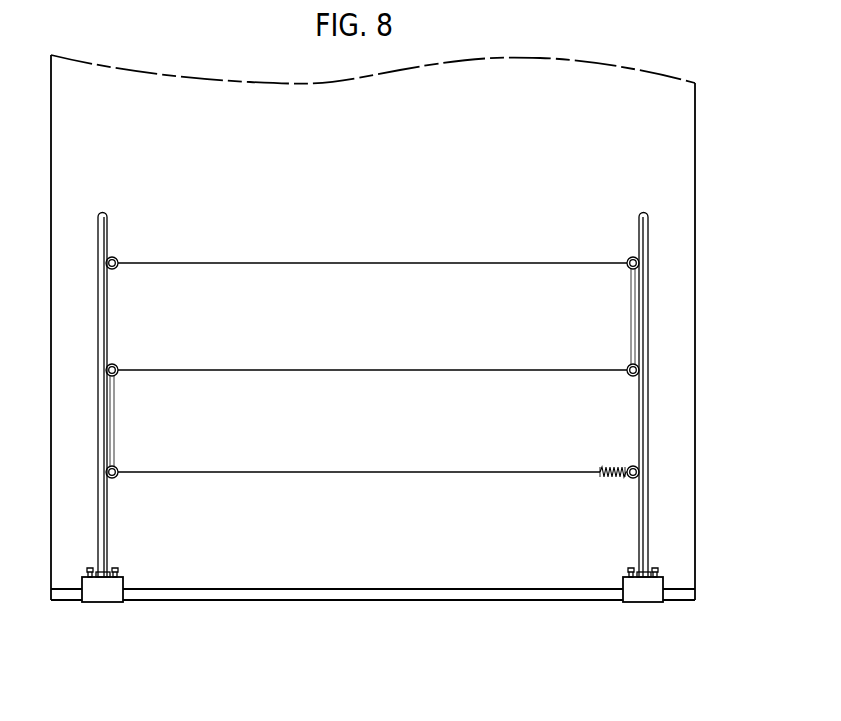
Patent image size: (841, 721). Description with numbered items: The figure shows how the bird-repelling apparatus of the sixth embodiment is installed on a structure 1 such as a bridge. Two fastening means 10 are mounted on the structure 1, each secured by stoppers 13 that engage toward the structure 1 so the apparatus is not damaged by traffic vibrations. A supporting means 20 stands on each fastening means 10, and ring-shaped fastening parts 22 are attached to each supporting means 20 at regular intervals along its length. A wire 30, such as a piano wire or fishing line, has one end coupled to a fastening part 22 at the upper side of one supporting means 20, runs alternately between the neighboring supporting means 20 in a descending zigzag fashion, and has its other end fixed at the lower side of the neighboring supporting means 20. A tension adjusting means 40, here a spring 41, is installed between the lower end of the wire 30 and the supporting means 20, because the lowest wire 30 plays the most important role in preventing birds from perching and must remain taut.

The structure 1 is at (437, 590).
The fastening means 10 is at (651, 604).
The stopper 13 is at (657, 568).
The supporting means 20 is at (101, 318).
The fastening part 22 is at (113, 364).
The wire 30 is at (400, 262).
The tension adjusting means 40 is at (598, 459).
The spring 41 is at (637, 466).